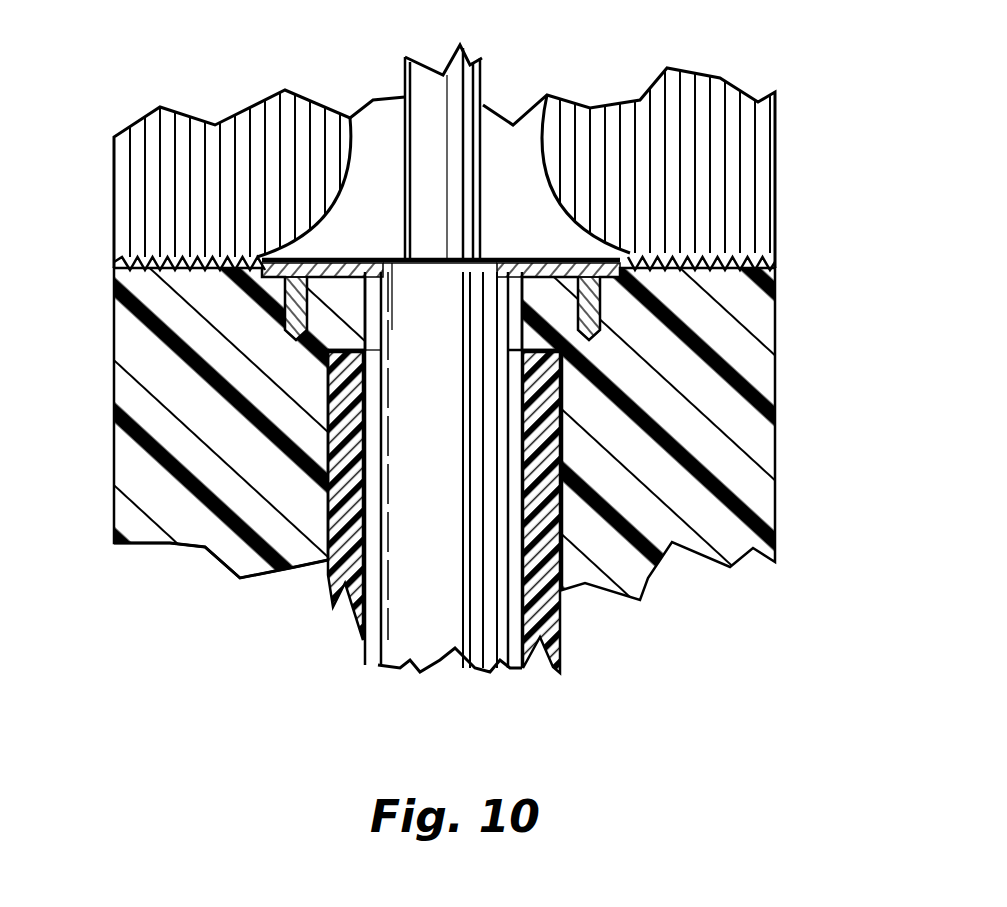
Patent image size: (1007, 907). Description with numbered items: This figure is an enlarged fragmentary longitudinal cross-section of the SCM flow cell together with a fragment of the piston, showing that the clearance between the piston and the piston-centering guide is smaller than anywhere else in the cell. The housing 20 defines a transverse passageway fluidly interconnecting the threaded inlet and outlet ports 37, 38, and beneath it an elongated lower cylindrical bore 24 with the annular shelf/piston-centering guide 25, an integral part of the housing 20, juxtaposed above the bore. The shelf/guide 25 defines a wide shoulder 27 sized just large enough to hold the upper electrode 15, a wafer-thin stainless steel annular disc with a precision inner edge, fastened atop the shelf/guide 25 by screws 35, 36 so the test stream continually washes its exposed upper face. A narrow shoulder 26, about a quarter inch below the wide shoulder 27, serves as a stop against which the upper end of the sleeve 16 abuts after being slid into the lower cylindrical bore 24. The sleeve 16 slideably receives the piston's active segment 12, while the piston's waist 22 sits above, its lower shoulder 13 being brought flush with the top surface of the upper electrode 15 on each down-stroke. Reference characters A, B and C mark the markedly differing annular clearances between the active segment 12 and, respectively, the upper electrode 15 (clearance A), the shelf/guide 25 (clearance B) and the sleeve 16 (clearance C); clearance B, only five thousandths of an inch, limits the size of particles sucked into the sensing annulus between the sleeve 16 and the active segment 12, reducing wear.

The active segment 12 is at (452, 523).
The lower shoulder 13 is at (490, 258).
The upper electrode 15 is at (325, 262).
The sleeve 16 is at (552, 615).
The housing 20 is at (652, 457).
The waist 22 is at (410, 92).
The lower cylindrical bore 24 is at (325, 465).
The shelf/piston-centering guide 25 is at (384, 335).
The narrow shoulder 26 is at (367, 352).
The wide shoulder 27 is at (320, 360).
The screw 35 is at (575, 248).
The screw 36 is at (302, 256).
The threaded inlet port 37 is at (735, 125).
The threaded outlet port 38 is at (152, 193).
The clearance A is at (390, 258).
The clearance B is at (376, 300).
The clearance C is at (370, 462).